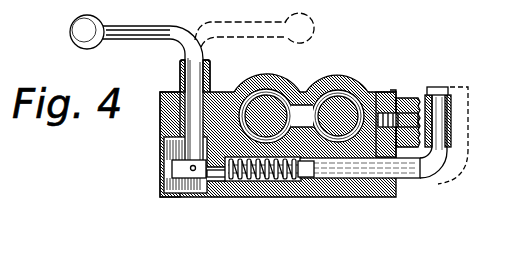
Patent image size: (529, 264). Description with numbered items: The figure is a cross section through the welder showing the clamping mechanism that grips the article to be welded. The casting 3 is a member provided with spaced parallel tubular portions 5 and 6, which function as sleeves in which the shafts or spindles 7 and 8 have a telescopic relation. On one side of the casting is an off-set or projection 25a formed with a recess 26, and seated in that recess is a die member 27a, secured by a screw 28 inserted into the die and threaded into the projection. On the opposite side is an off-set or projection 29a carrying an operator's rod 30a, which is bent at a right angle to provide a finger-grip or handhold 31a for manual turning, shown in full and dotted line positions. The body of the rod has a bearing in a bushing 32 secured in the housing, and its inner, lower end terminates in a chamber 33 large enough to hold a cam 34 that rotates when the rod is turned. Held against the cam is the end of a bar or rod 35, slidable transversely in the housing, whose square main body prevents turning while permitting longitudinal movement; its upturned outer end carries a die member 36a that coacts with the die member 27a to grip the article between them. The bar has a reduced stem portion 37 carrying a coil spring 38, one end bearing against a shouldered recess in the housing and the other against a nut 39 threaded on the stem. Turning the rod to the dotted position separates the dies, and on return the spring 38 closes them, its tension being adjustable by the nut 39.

The casting 3 is at (313, 91).
The tubular portion 5 is at (340, 97).
The tubular portion 6 is at (263, 98).
The shaft or spindle 7 is at (340, 122).
The shaft or spindle 8 is at (259, 126).
The off-set or projection 25a is at (389, 93).
The recess 26 is at (404, 97).
The die member 27a is at (426, 89).
The screw 28 is at (449, 130).
The off-set or projection 29a is at (166, 129).
The operator's rod 30a is at (182, 83).
The finger-grip or handhold 31a is at (147, 30).
The bushing 32 is at (206, 74).
The chamber 33 is at (191, 187).
The cam 34 is at (182, 170).
The bar or rod 35 is at (373, 180).
The die member 36a is at (460, 106).
The reduced stem portion 37 is at (266, 183).
The coil spring 38 is at (301, 183).
The nut 39 is at (216, 186).